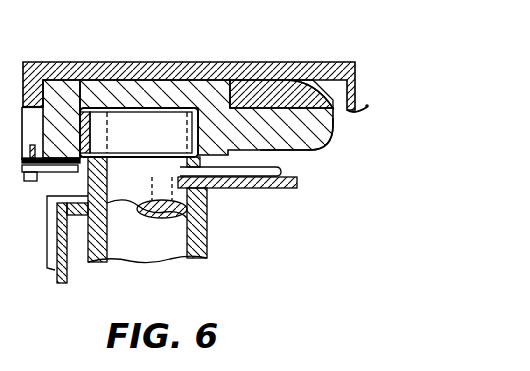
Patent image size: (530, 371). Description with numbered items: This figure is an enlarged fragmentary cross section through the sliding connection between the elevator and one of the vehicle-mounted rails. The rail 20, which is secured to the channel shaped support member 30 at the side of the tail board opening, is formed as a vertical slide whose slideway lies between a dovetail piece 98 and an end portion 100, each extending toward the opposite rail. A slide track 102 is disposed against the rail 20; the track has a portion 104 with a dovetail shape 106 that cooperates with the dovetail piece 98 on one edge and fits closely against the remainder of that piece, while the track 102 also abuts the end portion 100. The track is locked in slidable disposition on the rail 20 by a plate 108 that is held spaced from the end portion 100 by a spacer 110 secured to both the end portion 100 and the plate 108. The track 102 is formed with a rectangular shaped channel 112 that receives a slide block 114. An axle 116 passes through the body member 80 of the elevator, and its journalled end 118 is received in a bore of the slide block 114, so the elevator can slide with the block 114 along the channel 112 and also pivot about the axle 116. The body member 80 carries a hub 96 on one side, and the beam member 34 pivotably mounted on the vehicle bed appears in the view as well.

The rail 20 is at (203, 62).
The channel shaped support member 30 is at (368, 104).
The beam member 34 is at (21, 111).
The body member 80 is at (0, 277).
The hub 96 is at (8, 27).
The dovetail piece 98 is at (253, 100).
The end portion 100 is at (22, 100).
The slide track 102 is at (57, 97).
The portion 104 is at (313, 133).
The dovetail shape 106 is at (333, 127).
The plate 108 is at (55, 163).
The spacer 110 is at (17, 152).
The rectangular shaped channel 112 is at (105, 111).
The slide block 114 is at (135, 130).
The axle 116 is at (198, 220).
The journalled end 118 is at (180, 134).